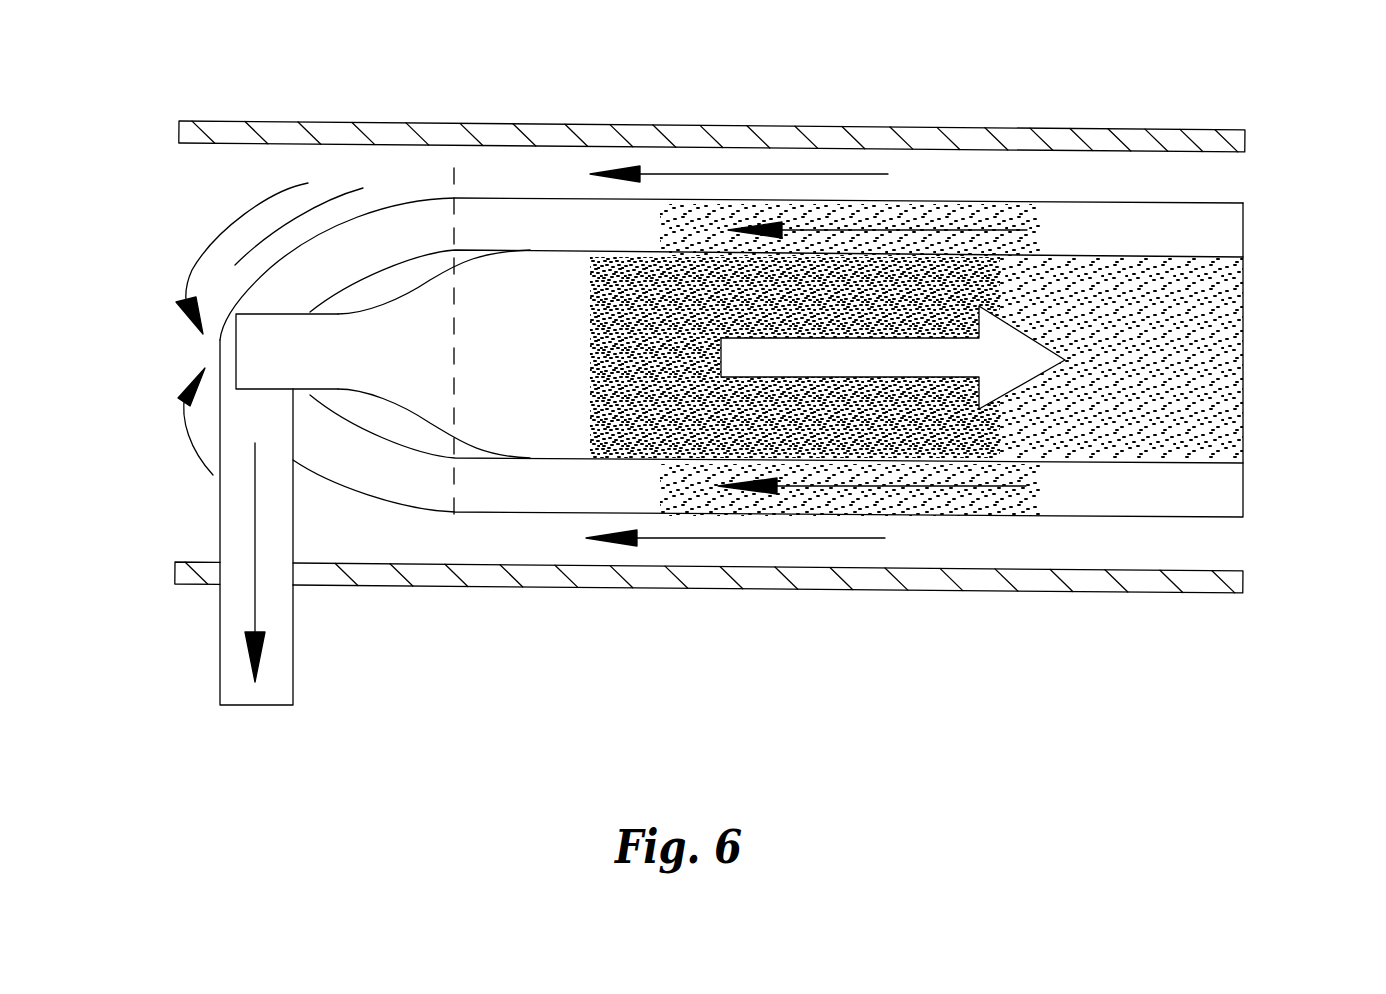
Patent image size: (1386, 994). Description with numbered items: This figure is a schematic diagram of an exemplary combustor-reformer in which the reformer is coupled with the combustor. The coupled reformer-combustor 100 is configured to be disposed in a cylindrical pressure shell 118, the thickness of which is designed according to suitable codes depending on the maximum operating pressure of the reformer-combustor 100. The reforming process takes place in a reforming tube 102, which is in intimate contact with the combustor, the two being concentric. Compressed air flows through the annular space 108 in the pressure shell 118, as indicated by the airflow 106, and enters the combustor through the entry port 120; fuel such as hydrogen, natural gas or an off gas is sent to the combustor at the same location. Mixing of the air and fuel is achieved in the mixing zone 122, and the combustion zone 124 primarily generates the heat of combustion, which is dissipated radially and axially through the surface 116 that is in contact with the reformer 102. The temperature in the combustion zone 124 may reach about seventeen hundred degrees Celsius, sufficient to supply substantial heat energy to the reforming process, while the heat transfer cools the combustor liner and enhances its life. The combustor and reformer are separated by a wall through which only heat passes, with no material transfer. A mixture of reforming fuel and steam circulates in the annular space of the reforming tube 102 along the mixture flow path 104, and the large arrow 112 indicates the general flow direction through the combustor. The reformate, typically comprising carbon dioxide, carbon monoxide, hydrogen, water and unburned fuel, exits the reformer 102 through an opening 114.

The coupled reformer-combustor 100 is at (214, 76).
The reforming tube 102 is at (1240, 225).
The mixture flow path 104 is at (942, 229).
The airflow 106 is at (707, 172).
The annular space 108 is at (378, 157).
The main flow direction 112 is at (1028, 370).
The opening 114 is at (255, 600).
The surface 116 is at (1224, 257).
The cylindrical pressure shell 118 is at (535, 137).
The entry port 120 is at (250, 352).
The mixing zone 122 is at (408, 402).
The combustion zone 124 is at (647, 428).